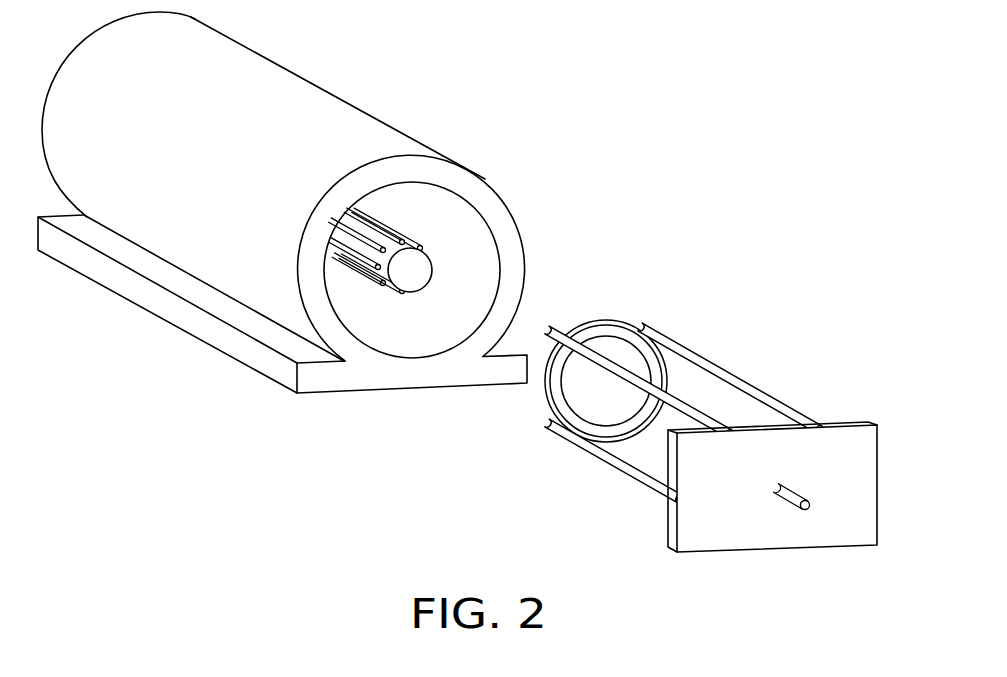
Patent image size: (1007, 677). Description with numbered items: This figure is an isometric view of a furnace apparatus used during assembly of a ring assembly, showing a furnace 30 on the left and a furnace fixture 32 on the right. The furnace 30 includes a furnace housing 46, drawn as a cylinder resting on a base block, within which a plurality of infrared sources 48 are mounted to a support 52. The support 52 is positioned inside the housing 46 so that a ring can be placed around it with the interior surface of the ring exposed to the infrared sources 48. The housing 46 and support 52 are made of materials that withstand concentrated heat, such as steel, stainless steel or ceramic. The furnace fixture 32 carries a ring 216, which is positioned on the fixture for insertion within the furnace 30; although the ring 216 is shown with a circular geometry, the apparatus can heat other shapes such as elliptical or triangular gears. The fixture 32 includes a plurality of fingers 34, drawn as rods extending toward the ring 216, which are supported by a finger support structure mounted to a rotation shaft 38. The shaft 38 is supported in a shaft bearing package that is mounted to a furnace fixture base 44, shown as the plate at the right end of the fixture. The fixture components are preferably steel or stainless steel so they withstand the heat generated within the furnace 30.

The furnace 30 is at (307, 202).
The furnace housing 46 is at (298, 81).
The infrared sources 48 is at (357, 233).
The support 52 is at (415, 267).
The furnace fixture 32 is at (699, 425).
The ring 216 is at (612, 322).
The fingers 34 is at (687, 355).
The furnace fixture base 44 is at (835, 427).
The rotation shaft 38 is at (787, 497).